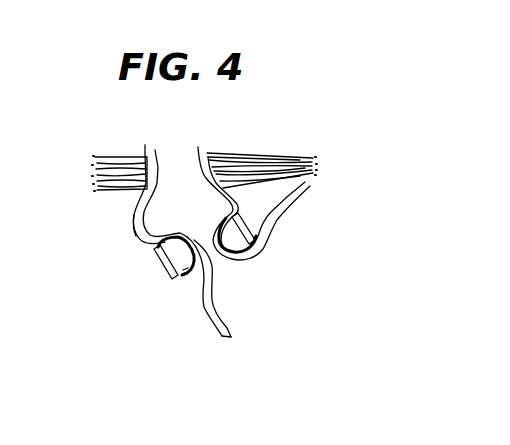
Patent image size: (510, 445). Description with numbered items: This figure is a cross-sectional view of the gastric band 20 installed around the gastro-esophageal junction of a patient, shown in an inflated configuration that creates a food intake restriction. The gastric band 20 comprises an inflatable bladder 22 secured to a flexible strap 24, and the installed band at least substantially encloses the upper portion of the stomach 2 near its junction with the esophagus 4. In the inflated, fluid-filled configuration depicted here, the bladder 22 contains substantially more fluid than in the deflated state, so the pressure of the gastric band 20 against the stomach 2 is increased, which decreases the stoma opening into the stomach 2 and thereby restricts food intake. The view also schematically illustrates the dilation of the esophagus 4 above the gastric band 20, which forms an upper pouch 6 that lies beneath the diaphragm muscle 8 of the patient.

The stomach 2 is at (213, 317).
The esophagus 4 is at (205, 153).
The upper pouch 6 is at (132, 223).
The diaphragm muscle 8 is at (122, 157).
The gastric band 20 is at (141, 269).
The inflatable bladder 22 is at (187, 270).
The flexible strap 24 is at (175, 276).